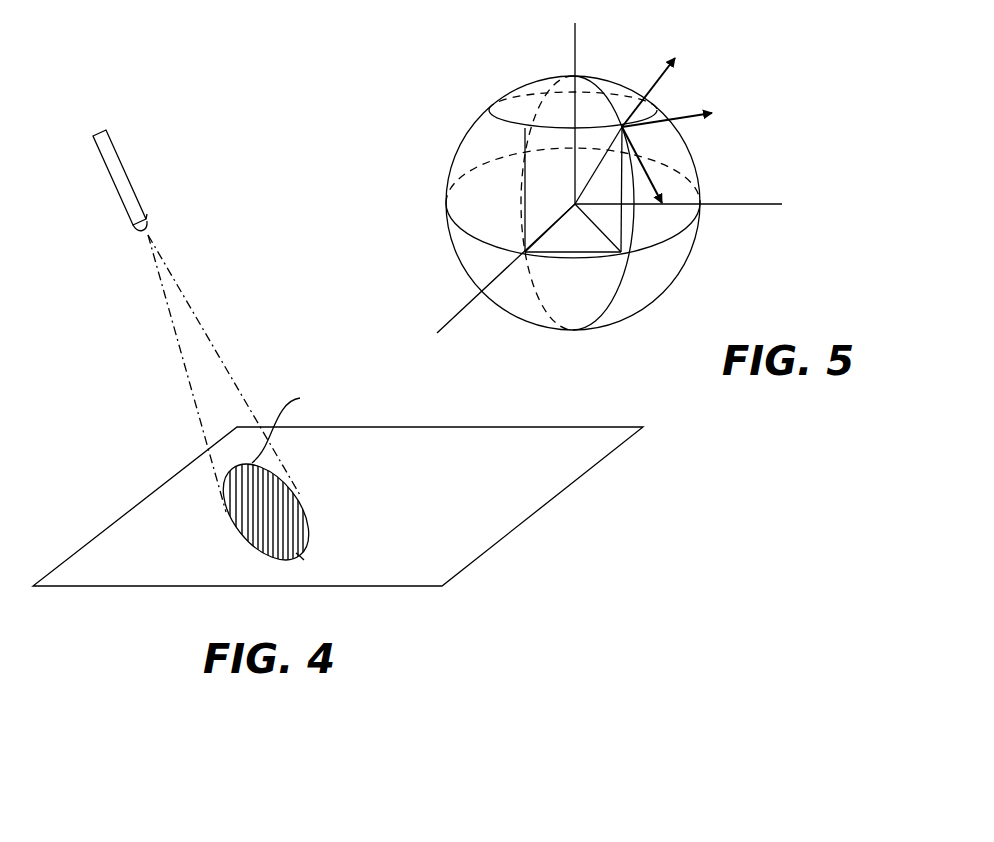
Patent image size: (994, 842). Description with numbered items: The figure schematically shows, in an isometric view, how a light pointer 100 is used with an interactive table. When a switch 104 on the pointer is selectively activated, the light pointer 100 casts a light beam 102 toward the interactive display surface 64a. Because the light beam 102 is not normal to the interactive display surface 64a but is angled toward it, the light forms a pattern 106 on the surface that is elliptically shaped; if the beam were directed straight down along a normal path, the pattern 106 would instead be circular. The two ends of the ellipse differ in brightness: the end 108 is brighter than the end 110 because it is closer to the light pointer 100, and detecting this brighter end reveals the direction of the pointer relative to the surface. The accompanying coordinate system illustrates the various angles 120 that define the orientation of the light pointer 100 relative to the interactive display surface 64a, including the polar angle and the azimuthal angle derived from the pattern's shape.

In FIG. 4, the light pointer 100 is at (114, 150).
In FIG. 4, the switch 104 is at (144, 201).
In FIG. 4, the light beam 102 is at (207, 335).
In FIG. 4, the end of the ellipse 108 is at (295, 421).
In FIG. 4, the pattern 106 is at (305, 514).
In FIG. 4, the end of the ellipse 110 is at (296, 553).
In FIG. 4, the interactive display surface 64a is at (548, 497).
In FIG. 5, the angles 120 is at (762, 256).